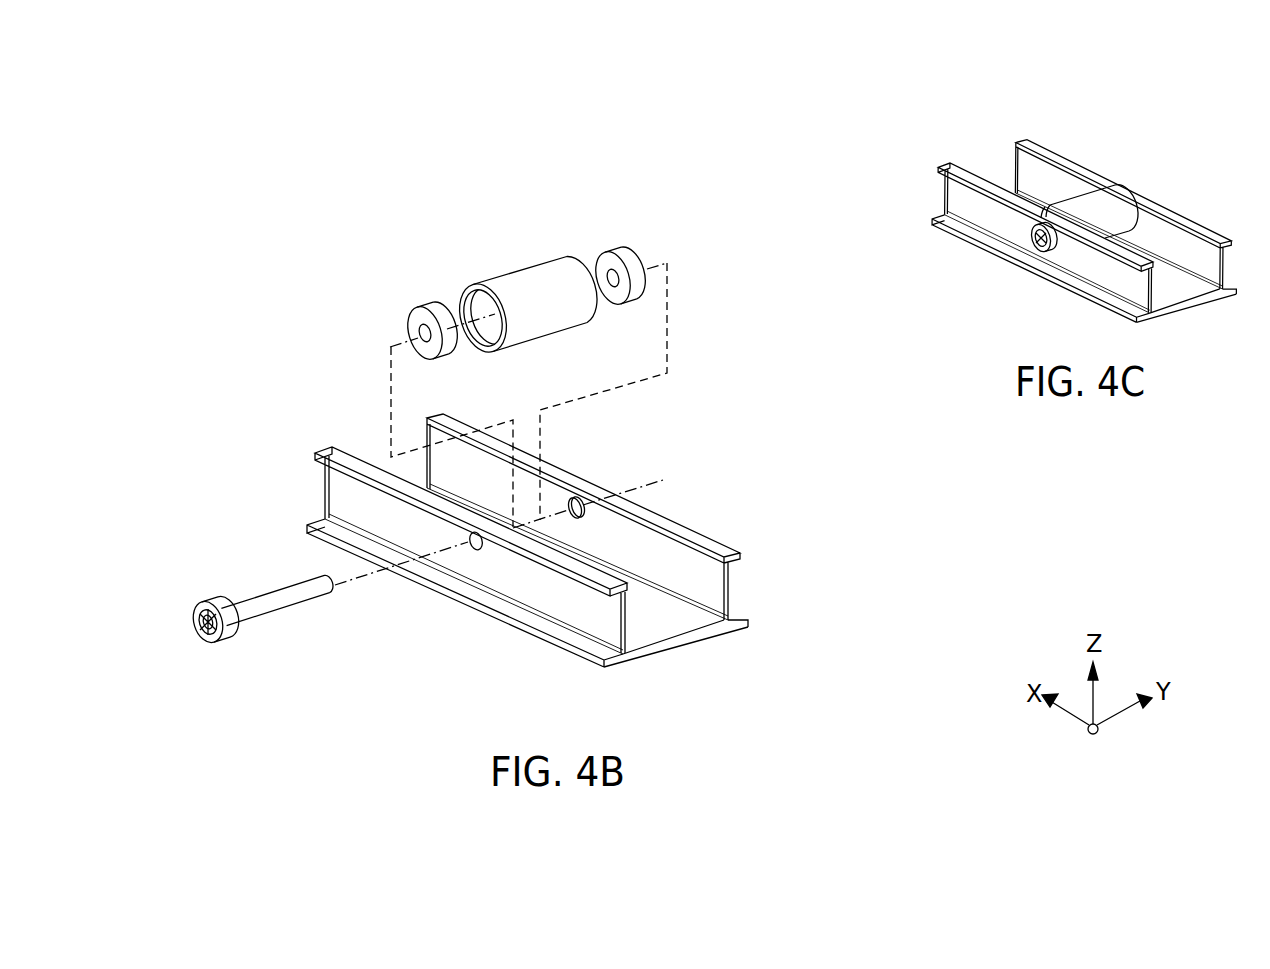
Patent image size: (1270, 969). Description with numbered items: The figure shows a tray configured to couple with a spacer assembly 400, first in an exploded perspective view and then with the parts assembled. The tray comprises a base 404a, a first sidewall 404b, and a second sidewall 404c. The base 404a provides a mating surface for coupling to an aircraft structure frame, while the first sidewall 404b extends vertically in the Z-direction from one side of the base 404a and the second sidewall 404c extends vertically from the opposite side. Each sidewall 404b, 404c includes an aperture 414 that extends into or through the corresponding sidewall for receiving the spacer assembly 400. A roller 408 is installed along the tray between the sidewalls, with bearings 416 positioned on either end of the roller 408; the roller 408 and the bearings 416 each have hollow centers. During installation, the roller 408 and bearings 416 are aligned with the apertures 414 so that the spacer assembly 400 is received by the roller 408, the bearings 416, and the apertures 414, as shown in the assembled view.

In FIG. 4B, the spacer assembly 400 is at (235, 574).
In FIG. 4C, the spacer assembly 400 is at (948, 118).
In FIG. 4B, the base 404a is at (707, 636).
In FIG. 4B, the first sidewall 404b is at (598, 610).
In FIG. 4B, the second sidewall 404c is at (733, 590).
In FIG. 4B, the roller 408 is at (523, 273).
In FIG. 4C, the roller 408 is at (1102, 199).
In FIG. 4B, the aperture 414 is at (577, 504).
In FIG. 4B, the bearing 416 is at (426, 307).